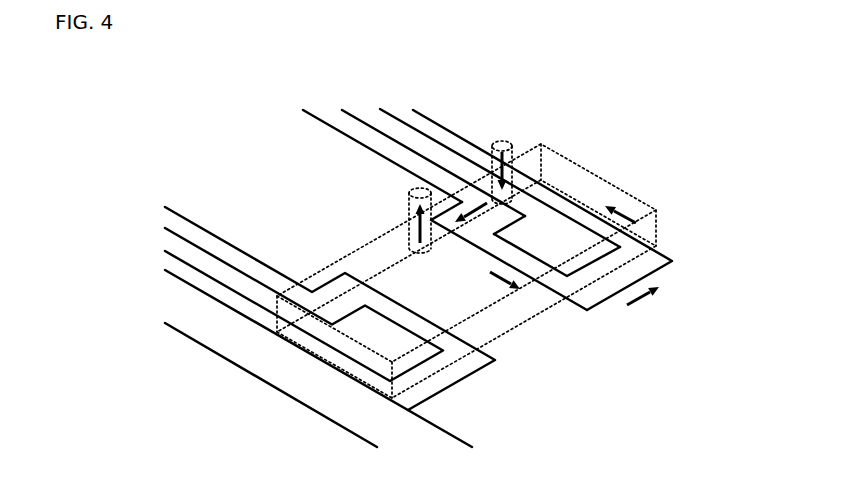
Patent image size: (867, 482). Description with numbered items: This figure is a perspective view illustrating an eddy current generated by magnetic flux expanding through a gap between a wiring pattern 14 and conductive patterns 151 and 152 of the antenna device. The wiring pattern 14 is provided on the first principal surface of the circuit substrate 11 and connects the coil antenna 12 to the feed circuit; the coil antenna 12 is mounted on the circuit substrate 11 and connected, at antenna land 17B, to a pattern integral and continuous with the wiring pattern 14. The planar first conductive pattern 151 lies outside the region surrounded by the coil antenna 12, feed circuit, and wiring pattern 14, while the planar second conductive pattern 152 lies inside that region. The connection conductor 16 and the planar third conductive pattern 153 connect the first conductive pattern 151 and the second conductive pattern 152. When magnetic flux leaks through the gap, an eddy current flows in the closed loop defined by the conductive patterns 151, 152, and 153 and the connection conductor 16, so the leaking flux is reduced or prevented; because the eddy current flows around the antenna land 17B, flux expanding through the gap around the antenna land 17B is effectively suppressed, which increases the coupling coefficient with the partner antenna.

The circuit substrate 11 is at (335, 398).
The coil antenna 12 is at (518, 313).
The wiring pattern 14 is at (528, 194).
The connection conductor 16 is at (521, 122).
The first conductive pattern 151 is at (692, 305).
The second conductive pattern 152 is at (363, 167).
The third conductive pattern 153 is at (473, 272).
The antenna land 17B is at (567, 240).